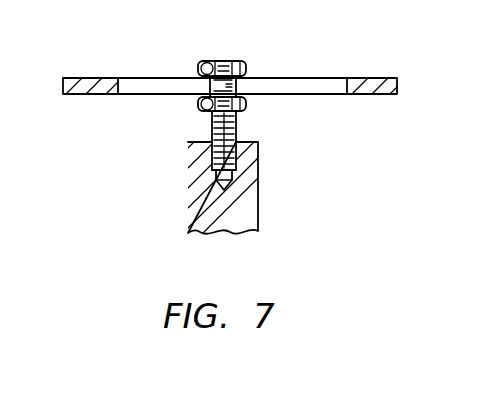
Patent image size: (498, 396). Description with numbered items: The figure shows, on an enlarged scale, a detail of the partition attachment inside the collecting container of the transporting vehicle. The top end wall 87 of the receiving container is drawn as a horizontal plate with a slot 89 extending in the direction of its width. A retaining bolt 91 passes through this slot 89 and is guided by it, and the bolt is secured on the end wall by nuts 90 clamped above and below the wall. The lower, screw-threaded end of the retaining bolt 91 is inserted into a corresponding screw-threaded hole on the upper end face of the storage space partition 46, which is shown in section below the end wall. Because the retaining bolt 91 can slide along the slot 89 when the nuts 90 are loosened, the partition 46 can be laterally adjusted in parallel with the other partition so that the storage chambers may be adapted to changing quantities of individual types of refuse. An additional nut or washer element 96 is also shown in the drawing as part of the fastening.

The top end wall 87 is at (366, 78).
The slots 89 is at (138, 82).
The nuts 90 is at (254, 99).
The retaining bolts 91 is at (237, 130).
The lock nut 96 is at (225, 61).
The storage space partition 46 is at (255, 206).